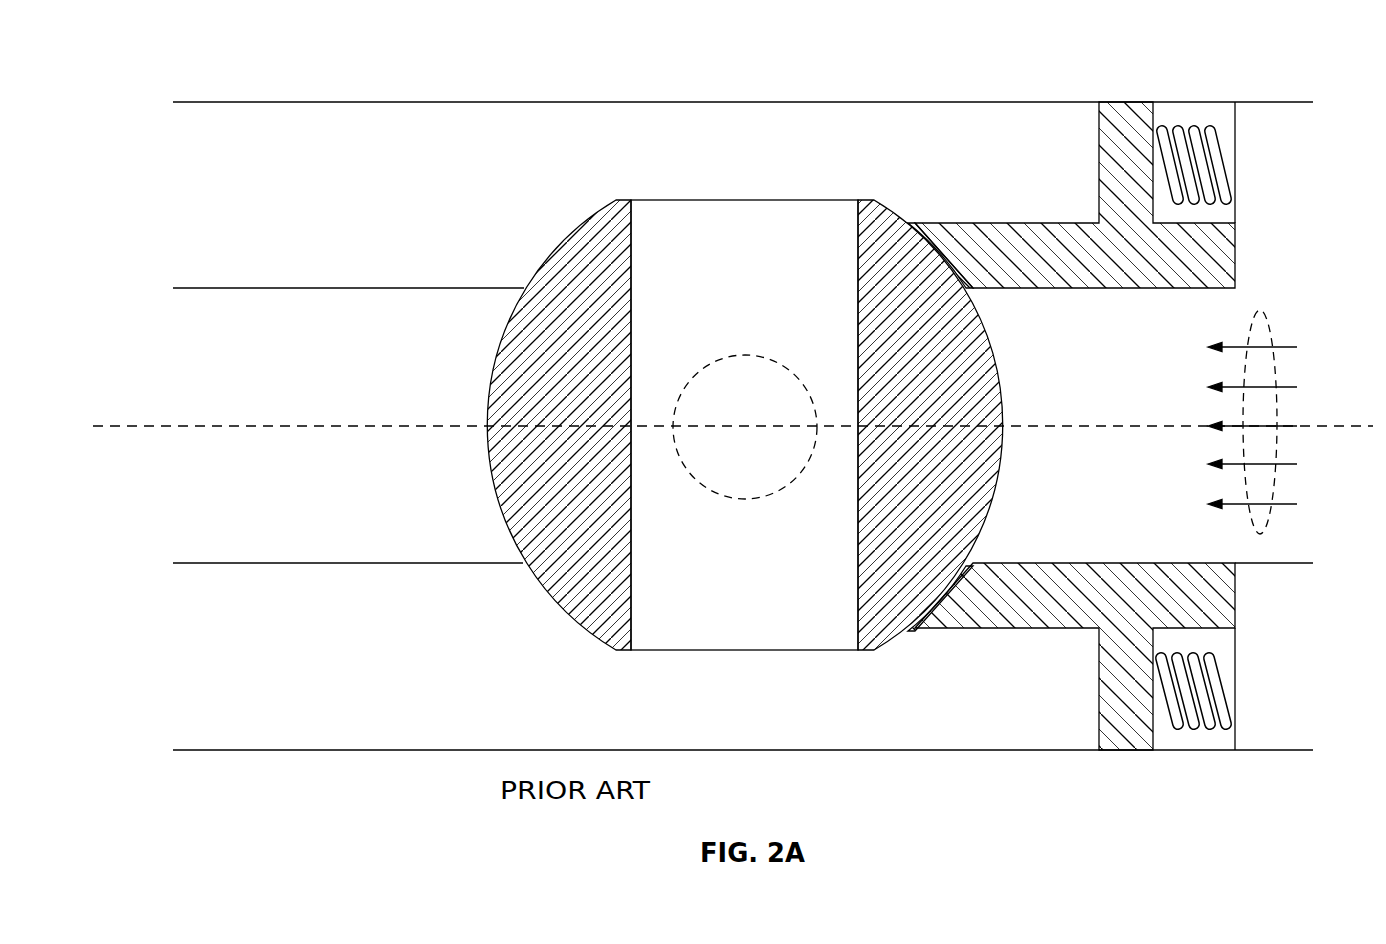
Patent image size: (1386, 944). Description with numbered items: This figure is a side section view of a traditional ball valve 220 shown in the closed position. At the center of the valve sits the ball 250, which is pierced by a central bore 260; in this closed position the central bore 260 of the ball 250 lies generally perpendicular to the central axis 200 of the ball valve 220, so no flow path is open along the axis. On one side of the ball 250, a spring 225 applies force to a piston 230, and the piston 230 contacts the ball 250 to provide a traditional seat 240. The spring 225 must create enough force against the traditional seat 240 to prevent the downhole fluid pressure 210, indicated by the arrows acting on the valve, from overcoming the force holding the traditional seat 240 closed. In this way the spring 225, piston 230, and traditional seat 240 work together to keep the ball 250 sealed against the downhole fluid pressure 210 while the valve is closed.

The central axis 200 is at (262, 426).
The downhole fluid pressure 210 is at (1282, 348).
The ball valve 220 is at (765, 72).
The spring 225 is at (1190, 126).
The piston 230 is at (1022, 242).
The traditional seat 240 is at (945, 272).
The ball 250 is at (585, 383).
The central bore 260 is at (728, 224).